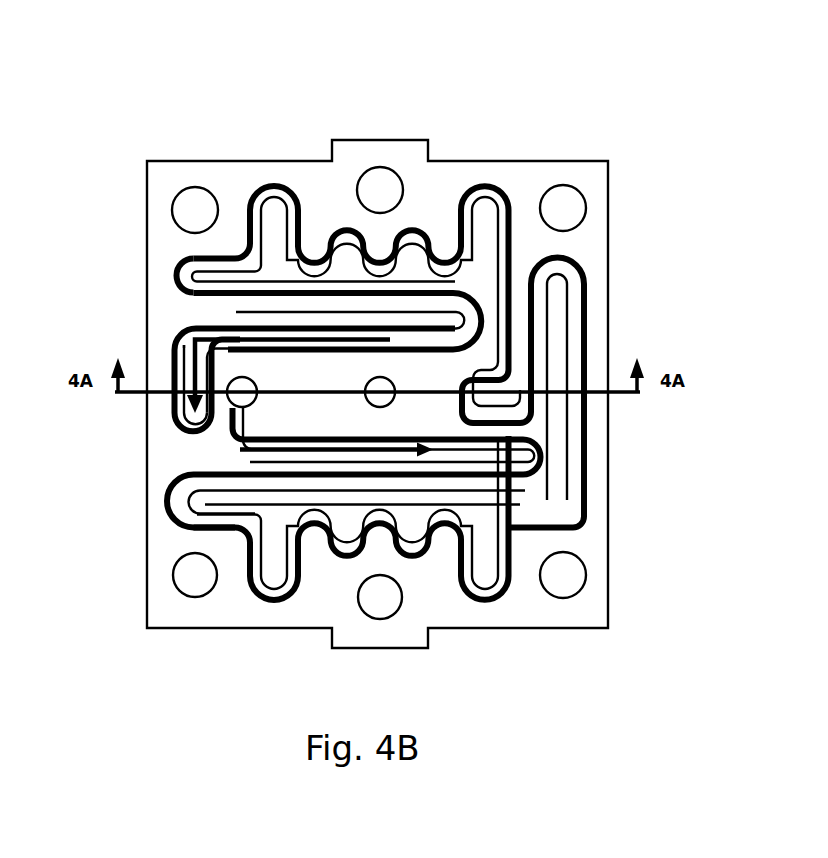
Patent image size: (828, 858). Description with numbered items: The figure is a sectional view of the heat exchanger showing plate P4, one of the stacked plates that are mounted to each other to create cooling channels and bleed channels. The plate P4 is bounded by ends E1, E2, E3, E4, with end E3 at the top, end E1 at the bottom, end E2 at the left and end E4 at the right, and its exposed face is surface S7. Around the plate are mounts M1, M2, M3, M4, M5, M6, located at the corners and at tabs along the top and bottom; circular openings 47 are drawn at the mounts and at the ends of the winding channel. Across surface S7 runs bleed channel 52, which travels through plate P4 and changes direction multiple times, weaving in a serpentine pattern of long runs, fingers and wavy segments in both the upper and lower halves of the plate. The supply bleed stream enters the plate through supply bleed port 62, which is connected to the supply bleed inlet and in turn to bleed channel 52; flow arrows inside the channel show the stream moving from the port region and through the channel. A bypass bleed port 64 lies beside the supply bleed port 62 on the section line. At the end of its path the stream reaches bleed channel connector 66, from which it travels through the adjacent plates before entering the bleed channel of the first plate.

The plate P4 is at (128, 96).
The bleed channel 52 is at (268, 187).
The mounting hole 47 is at (190, 214).
The supply bleed port 62 is at (243, 385).
The bypass bleed port 64 is at (392, 402).
The bleed channel connector 66 is at (188, 421).
The mount M1 is at (598, 612).
The mount M2 is at (417, 645).
The mount M3 is at (163, 608).
The mount M4 is at (167, 173).
The mount M5 is at (355, 150).
The mount M6 is at (600, 174).
The end E1 is at (366, 648).
The end E2 is at (150, 405).
The end E3 is at (378, 138).
The end E4 is at (610, 236).
The surface S7 is at (174, 466).